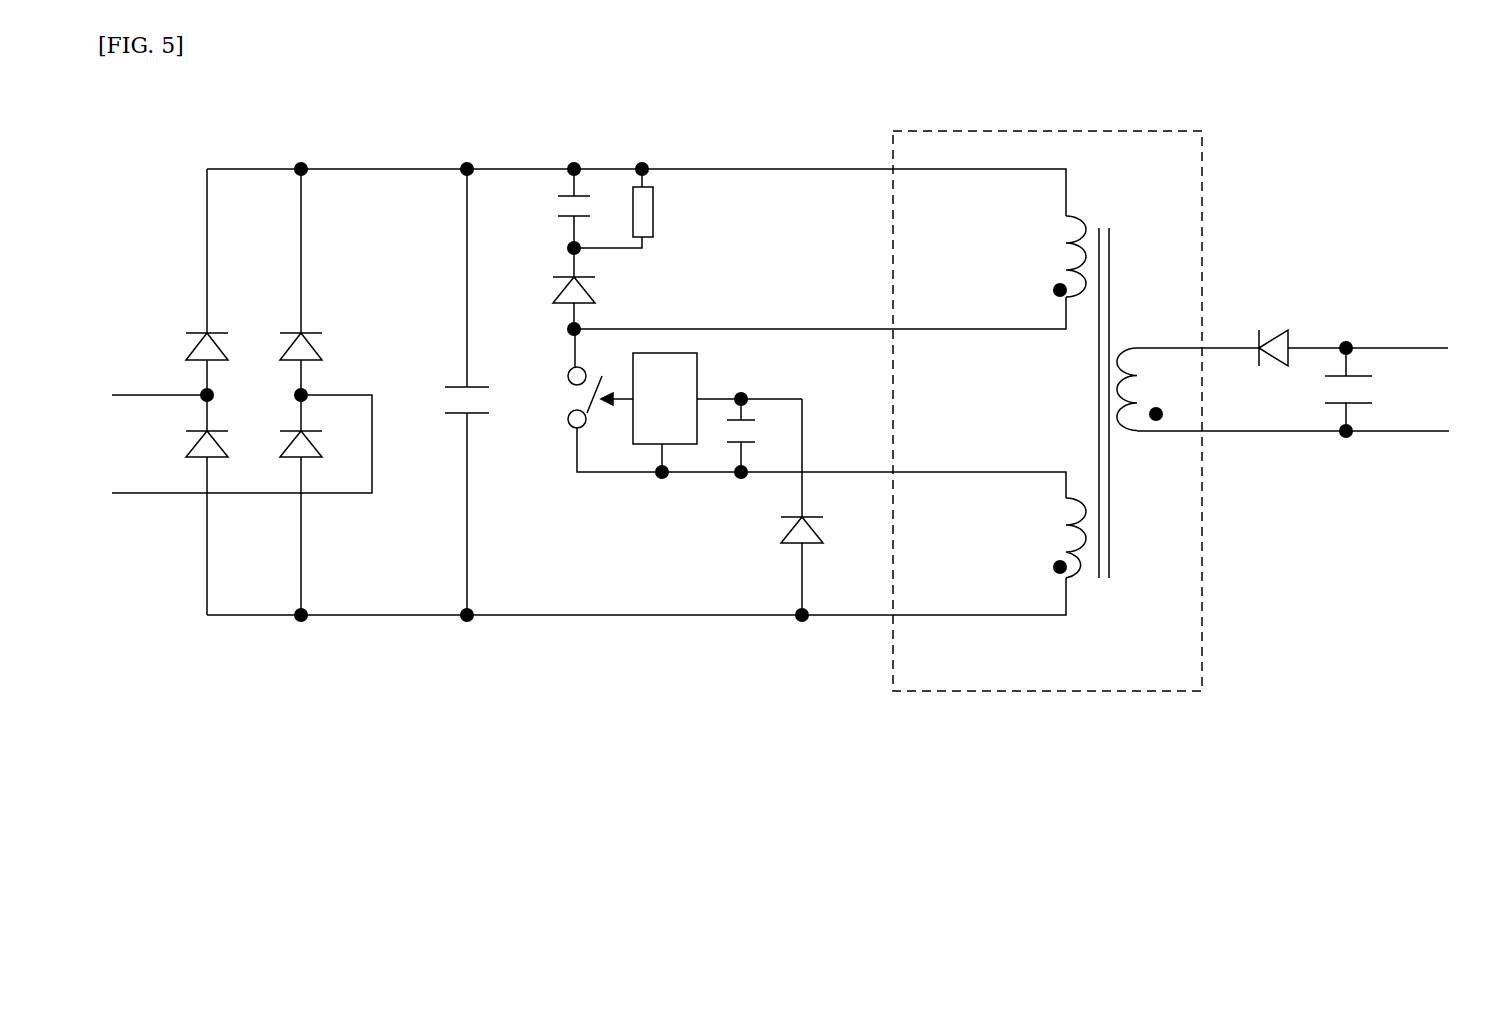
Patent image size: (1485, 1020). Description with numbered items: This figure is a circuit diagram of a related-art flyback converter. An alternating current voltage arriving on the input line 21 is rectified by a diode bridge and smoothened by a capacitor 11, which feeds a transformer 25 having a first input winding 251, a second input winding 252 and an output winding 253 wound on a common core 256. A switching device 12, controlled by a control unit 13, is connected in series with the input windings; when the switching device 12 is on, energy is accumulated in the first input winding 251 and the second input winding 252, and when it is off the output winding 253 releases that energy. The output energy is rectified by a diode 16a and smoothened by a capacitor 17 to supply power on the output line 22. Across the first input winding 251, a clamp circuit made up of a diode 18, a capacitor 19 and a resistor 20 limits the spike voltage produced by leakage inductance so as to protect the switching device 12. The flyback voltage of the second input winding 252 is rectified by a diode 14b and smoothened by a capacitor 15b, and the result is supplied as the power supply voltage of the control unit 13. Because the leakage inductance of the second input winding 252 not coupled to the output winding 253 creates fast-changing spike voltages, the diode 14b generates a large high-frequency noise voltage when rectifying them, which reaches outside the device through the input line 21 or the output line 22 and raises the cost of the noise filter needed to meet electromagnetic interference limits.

The capacitor 11 is at (447, 422).
The switching device 12 is at (570, 395).
The control unit 13 is at (638, 452).
The diode 14b is at (783, 552).
The capacitor 15b is at (728, 452).
The diode 16a is at (1335, 281).
The capacitor 17 is at (1372, 390).
The diode 18 is at (555, 312).
The capacitor 19 is at (552, 207).
The resistor 20 is at (663, 208).
The input line 21 is at (404, 622).
The output line 22 is at (1442, 443).
The transformer 25 is at (1016, 388).
The first input winding 251 is at (1066, 258).
The second input winding 252 is at (1057, 538).
The output winding 253 is at (1135, 420).
The core 256 is at (1108, 585).